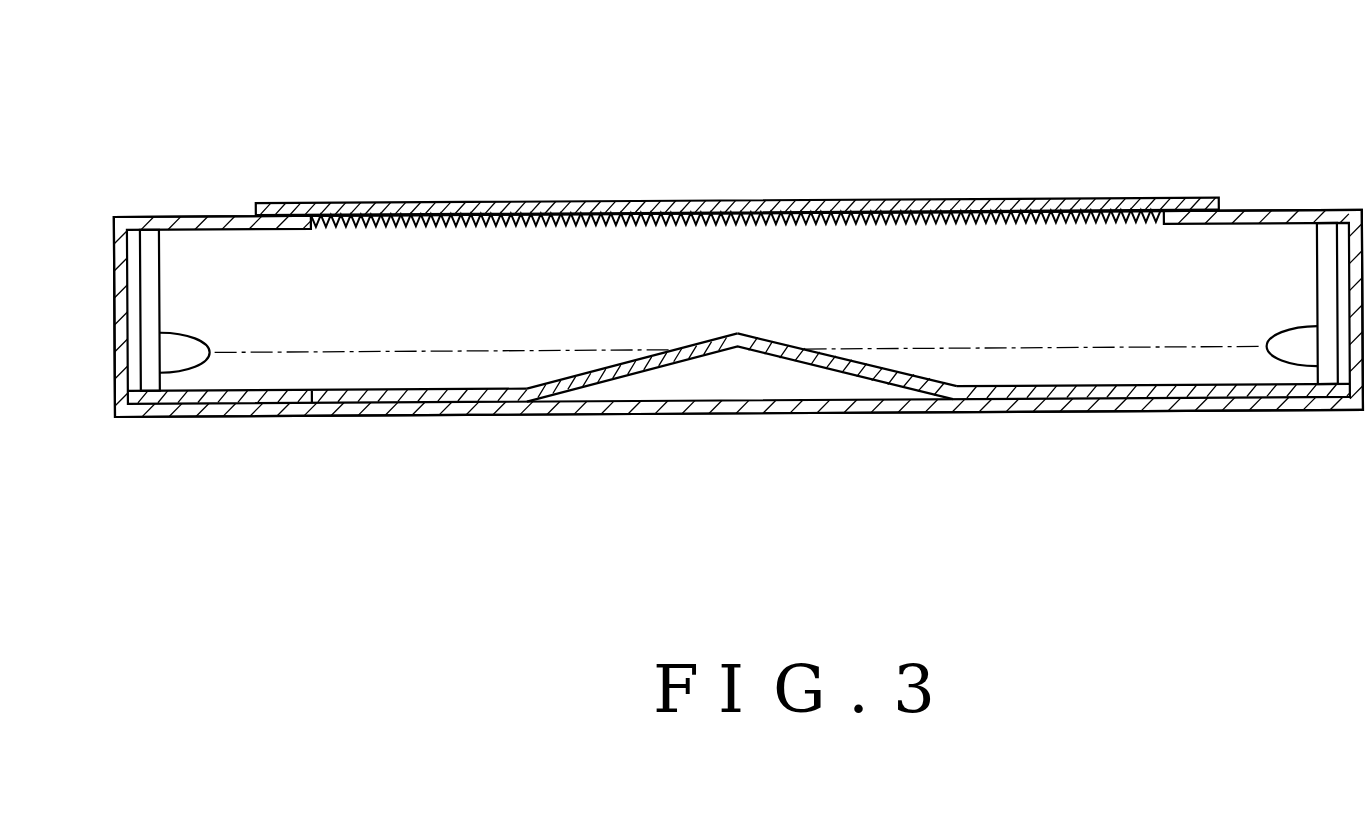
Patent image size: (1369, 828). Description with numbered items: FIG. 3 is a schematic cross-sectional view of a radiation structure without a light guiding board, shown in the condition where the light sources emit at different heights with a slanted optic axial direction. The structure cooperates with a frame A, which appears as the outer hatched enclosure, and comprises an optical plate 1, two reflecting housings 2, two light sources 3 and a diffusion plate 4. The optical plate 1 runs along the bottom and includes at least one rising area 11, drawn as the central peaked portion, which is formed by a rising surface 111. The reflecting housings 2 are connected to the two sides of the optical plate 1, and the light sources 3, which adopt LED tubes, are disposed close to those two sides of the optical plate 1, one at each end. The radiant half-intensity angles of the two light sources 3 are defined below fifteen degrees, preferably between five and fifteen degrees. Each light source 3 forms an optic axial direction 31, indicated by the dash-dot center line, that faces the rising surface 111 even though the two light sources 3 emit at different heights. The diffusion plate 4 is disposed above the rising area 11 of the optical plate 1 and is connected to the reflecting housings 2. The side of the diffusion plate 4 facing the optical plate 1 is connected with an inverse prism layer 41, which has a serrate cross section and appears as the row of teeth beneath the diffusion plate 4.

The frame A is at (122, 378).
The optical plate 1 is at (422, 395).
The rising area 11 is at (655, 364).
The rising surface 111 is at (680, 348).
The reflecting housing 2 is at (225, 217).
The light source 3 is at (176, 352).
The optic axial direction 31 is at (402, 352).
The diffusion plate 4 is at (592, 208).
The inverse prism layer 41 is at (887, 208).